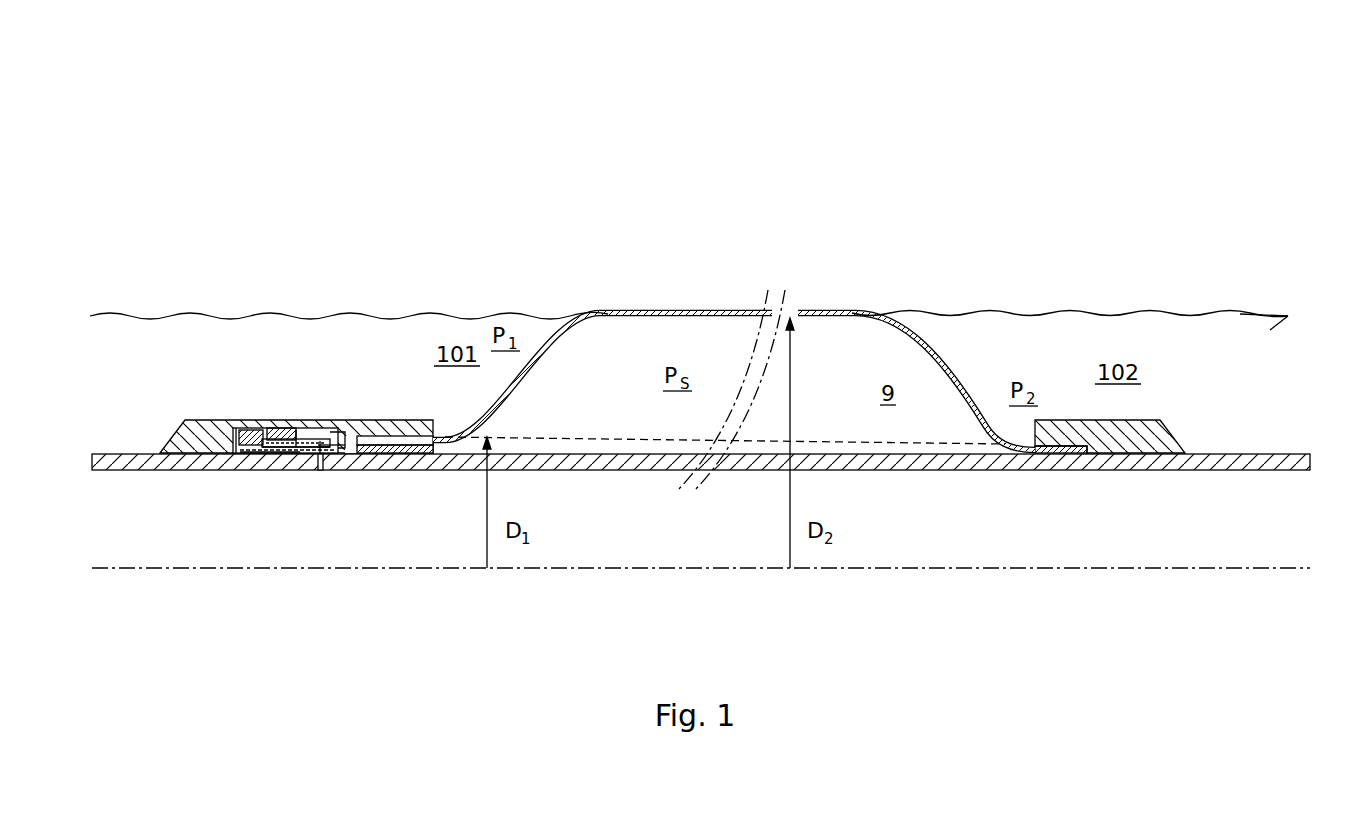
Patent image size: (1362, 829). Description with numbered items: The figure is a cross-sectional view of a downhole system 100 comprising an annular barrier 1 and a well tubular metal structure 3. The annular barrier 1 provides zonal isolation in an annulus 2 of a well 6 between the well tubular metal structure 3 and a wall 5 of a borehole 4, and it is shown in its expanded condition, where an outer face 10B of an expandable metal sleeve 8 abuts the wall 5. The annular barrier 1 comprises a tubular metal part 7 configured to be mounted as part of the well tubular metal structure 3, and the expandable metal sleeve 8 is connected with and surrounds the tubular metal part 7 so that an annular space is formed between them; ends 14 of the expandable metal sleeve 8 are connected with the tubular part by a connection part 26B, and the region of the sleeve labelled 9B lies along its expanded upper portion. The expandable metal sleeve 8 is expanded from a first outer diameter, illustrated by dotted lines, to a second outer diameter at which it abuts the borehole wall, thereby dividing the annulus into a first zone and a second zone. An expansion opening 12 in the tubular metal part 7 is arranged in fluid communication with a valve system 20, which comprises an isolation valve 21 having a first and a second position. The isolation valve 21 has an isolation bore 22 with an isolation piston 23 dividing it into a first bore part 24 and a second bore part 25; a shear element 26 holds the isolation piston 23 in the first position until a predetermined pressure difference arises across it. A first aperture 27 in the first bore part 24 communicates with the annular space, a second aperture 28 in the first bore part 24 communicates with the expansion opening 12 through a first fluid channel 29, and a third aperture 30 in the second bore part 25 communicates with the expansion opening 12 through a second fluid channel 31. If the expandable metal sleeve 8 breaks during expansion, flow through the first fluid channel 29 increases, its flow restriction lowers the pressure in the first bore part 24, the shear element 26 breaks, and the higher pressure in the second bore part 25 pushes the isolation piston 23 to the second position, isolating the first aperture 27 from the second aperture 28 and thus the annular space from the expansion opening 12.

The annular barrier 1 is at (1209, 172).
The downhole system 100 is at (1284, 144).
The annulus 2 is at (121, 330).
The well tubular metal structure 3 is at (145, 450).
The borehole 4 is at (1278, 330).
The wall 5 is at (1205, 318).
The well 6 is at (1257, 355).
The tubular metal part 7 is at (586, 466).
The expandable metal sleeve 8 is at (712, 318).
The membrane flat portion 9B is at (838, 325).
The outer face 10B is at (915, 320).
The expansion opening 12 is at (318, 456).
The ends 14 is at (403, 430).
The valve system 20 is at (268, 427).
The isolation valve 21 is at (253, 452).
The isolation bore 22 is at (306, 427).
The isolation piston 23 is at (243, 427).
The first bore part 24 is at (340, 430).
The second bore part 25 is at (243, 451).
The shear element 26 is at (268, 452).
The connection part 26B is at (1145, 420).
The first aperture 27 is at (366, 436).
The second aperture 28 is at (321, 447).
The first fluid channel 29 is at (322, 448).
The third aperture 30 is at (237, 447).
The second fluid channel 31 is at (292, 452).